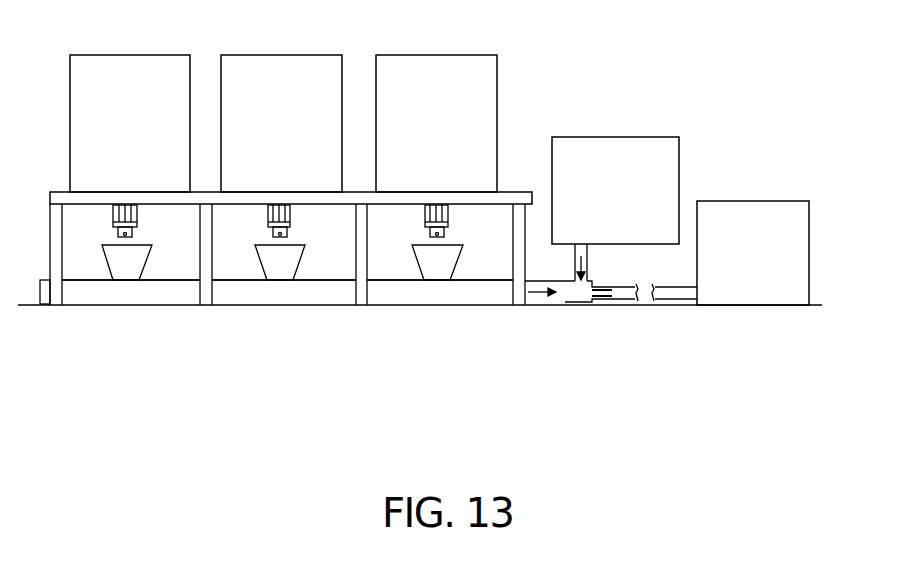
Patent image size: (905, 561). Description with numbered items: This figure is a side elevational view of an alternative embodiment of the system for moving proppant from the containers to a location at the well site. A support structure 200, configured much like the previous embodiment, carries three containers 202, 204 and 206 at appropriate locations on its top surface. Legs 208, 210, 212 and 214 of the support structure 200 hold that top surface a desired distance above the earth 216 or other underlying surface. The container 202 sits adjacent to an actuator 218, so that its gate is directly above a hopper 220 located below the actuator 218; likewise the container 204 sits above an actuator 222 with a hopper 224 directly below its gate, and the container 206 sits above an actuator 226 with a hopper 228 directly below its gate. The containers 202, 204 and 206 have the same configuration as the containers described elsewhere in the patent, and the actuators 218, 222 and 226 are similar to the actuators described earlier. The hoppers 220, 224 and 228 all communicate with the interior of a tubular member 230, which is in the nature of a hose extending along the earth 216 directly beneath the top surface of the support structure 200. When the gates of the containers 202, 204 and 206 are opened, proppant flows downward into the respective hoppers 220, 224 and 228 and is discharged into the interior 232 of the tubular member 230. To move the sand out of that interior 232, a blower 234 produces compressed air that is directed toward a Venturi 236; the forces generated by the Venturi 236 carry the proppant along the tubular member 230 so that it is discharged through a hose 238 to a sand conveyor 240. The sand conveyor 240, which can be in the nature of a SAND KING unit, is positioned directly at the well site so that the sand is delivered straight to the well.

The support structure 200 is at (60, 198).
The container 202 is at (122, 65).
The container 204 is at (279, 66).
The container 206 is at (434, 68).
The leg 208 is at (56, 255).
The leg 210 is at (212, 256).
The leg 212 is at (367, 241).
The leg 214 is at (513, 235).
The earth 216 is at (492, 308).
The actuator 218 is at (137, 223).
The hopper 220 is at (147, 266).
The actuator 222 is at (291, 224).
The hopper 224 is at (299, 265).
The actuator 226 is at (449, 224).
The hopper 228 is at (424, 272).
The tubular member 230 is at (152, 308).
The interior of the tubular member 232 is at (331, 297).
The blower 234 is at (612, 145).
The Venturi 236 is at (582, 298).
The hose 238 is at (668, 288).
The sand conveyor 240 is at (753, 205).